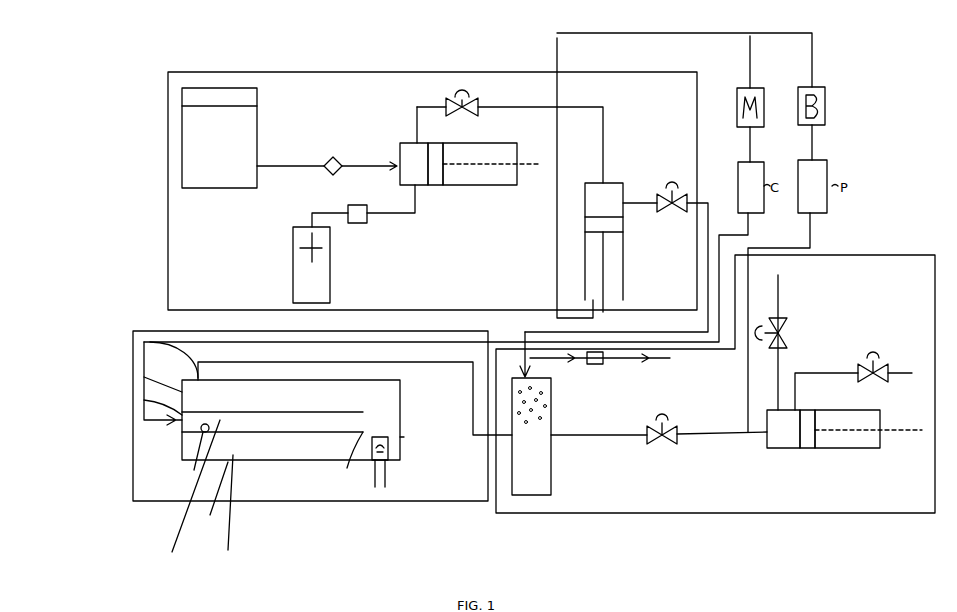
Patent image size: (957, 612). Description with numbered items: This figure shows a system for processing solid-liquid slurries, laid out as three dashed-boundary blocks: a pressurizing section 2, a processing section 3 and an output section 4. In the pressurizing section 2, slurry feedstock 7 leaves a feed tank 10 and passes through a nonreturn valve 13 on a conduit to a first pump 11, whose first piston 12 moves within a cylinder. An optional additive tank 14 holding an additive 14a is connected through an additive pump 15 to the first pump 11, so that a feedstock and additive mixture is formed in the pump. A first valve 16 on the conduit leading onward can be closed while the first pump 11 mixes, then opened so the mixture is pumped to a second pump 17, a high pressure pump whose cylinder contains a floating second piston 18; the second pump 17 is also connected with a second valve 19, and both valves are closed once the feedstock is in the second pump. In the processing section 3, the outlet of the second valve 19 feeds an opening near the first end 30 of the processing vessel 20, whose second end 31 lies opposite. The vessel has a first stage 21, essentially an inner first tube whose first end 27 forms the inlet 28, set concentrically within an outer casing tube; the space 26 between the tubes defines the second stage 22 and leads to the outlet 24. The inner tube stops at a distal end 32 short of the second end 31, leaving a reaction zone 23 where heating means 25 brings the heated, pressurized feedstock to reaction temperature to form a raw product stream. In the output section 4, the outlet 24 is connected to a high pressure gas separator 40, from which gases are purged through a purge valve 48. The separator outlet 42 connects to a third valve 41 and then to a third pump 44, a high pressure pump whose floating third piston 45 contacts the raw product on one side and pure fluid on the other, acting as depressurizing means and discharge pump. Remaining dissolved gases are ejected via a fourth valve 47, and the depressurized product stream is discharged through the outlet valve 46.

The pressurizing section 2 is at (176, 239).
The processing section 3 is at (133, 503).
The output section 4 is at (905, 516).
The feedstock 7 is at (182, 108).
The feed tank 10 is at (168, 150).
The first pump 11 is at (410, 140).
The first piston 12 is at (437, 141).
The nonreturn valve 13 is at (333, 156).
The additive tank 14 is at (290, 275).
The additive 14a is at (333, 285).
The additive pump 15 is at (367, 221).
The first valve 16 is at (459, 88).
The second pump 17 is at (614, 180).
The second piston 18 is at (628, 224).
The second valve 19 is at (680, 190).
The processing vessel 20 is at (267, 463).
The first stage 21 is at (189, 496).
The second stage 22 is at (216, 514).
The reaction zone 23 is at (400, 437).
The outlet 24 is at (133, 345).
The heating means 25 is at (392, 468).
The space 26 is at (144, 377).
The first end 27 is at (182, 433).
The inlet 28 is at (144, 400).
The first end 30 is at (182, 462).
The second end 31 is at (400, 418).
The distal end 32 is at (350, 458).
The high pressure gas separator 40 is at (535, 497).
The third valve 41 is at (661, 446).
The outlet 42 is at (522, 368).
The third pump 44 is at (770, 450).
The third piston 45 is at (808, 450).
The outlet valve 46 is at (875, 352).
The fourth valve 47 is at (788, 325).
The purge valve 48 is at (598, 365).